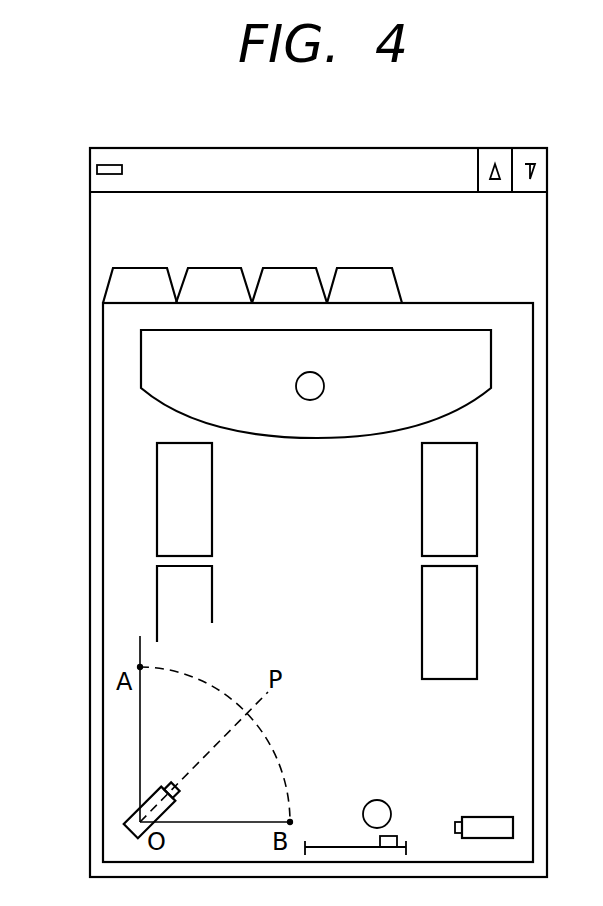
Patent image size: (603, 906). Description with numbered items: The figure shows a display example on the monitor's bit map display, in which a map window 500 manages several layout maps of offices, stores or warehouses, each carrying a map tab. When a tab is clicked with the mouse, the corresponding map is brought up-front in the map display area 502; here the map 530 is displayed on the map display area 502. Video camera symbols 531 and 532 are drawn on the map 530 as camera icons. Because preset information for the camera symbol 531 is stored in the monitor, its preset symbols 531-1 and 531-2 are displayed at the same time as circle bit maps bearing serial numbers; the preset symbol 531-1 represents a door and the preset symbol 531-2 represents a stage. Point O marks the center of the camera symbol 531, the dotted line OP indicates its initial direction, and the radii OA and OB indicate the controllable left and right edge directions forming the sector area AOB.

The map window 500 is at (362, 146).
The map display area 502 is at (477, 302).
The map 530 is at (303, 268).
The video camera symbol 531 is at (130, 820).
The preset symbol 531-1 is at (378, 800).
The preset symbol 531-2 is at (338, 427).
The video camera symbol 532 is at (500, 817).